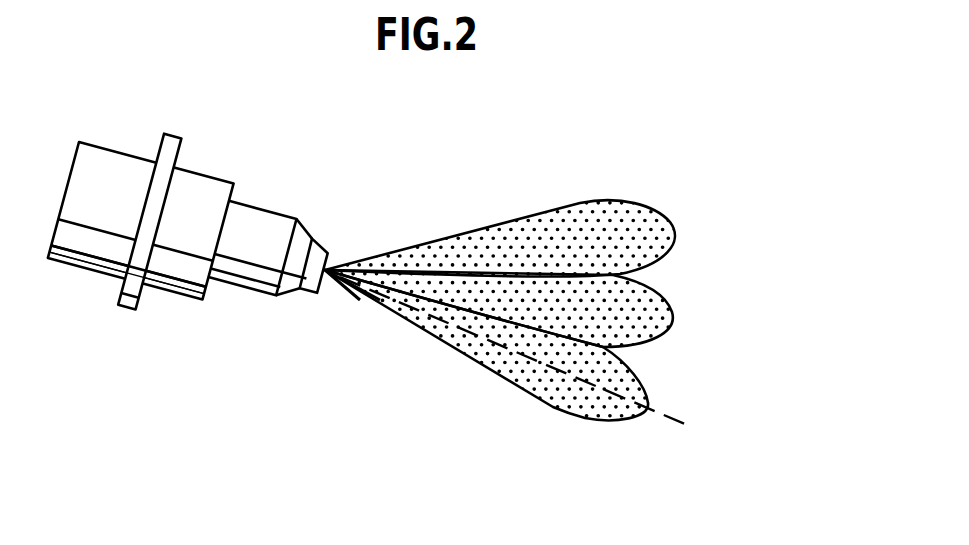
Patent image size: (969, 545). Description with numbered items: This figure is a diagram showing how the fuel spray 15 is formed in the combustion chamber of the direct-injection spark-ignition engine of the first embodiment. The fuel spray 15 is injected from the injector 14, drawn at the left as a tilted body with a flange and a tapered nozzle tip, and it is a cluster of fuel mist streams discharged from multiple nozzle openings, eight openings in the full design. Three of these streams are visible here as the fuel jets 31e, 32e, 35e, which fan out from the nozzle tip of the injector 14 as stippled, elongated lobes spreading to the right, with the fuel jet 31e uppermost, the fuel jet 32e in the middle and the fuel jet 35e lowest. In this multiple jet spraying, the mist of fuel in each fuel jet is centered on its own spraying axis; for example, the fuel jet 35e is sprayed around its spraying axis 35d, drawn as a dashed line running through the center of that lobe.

The injector 14 is at (200, 172).
The fuel spray 15 is at (545, 323).
The fuel jet 31e is at (650, 206).
The fuel jet 32e is at (653, 287).
The fuel jet 35e is at (647, 387).
The spraying axis 35d is at (680, 423).